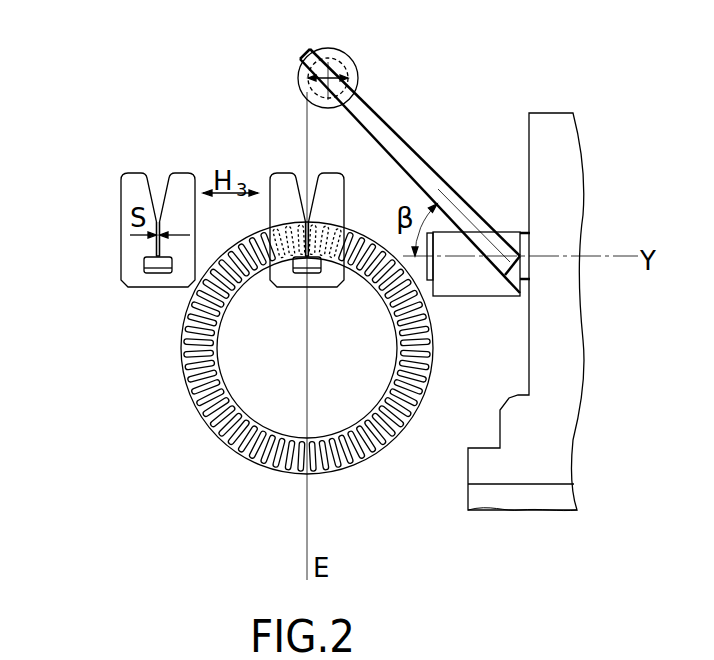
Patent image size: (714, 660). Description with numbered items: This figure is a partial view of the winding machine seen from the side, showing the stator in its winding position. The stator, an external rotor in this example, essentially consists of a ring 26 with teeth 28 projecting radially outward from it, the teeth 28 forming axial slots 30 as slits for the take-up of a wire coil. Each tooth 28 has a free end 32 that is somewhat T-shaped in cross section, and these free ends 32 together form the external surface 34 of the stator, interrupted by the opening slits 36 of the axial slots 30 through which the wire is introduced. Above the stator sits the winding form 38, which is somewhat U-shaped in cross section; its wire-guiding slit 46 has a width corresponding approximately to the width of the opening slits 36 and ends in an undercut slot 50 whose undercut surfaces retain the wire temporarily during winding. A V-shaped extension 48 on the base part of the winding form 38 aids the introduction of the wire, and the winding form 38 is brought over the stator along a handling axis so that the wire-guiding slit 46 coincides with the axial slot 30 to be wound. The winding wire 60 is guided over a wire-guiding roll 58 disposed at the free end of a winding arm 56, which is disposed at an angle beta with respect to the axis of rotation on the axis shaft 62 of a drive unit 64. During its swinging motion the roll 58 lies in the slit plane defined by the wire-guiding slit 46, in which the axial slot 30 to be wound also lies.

The ring 26 is at (220, 363).
The teeth 28 is at (188, 391).
The axial slots 30 is at (250, 436).
The free end 32 is at (273, 470).
The external surface 34 is at (181, 340).
The opening slits 36 is at (202, 420).
The winding form 38 is at (285, 178).
The wire-guiding slit 46 is at (157, 245).
The extension 48 is at (155, 188).
The undercut slot 50 is at (143, 265).
The winding arm 56 is at (390, 130).
The wire-guiding roll 58 is at (354, 60).
The winding wire 60 is at (304, 98).
The axis shaft 62 is at (462, 296).
The drive unit 64 is at (553, 116).